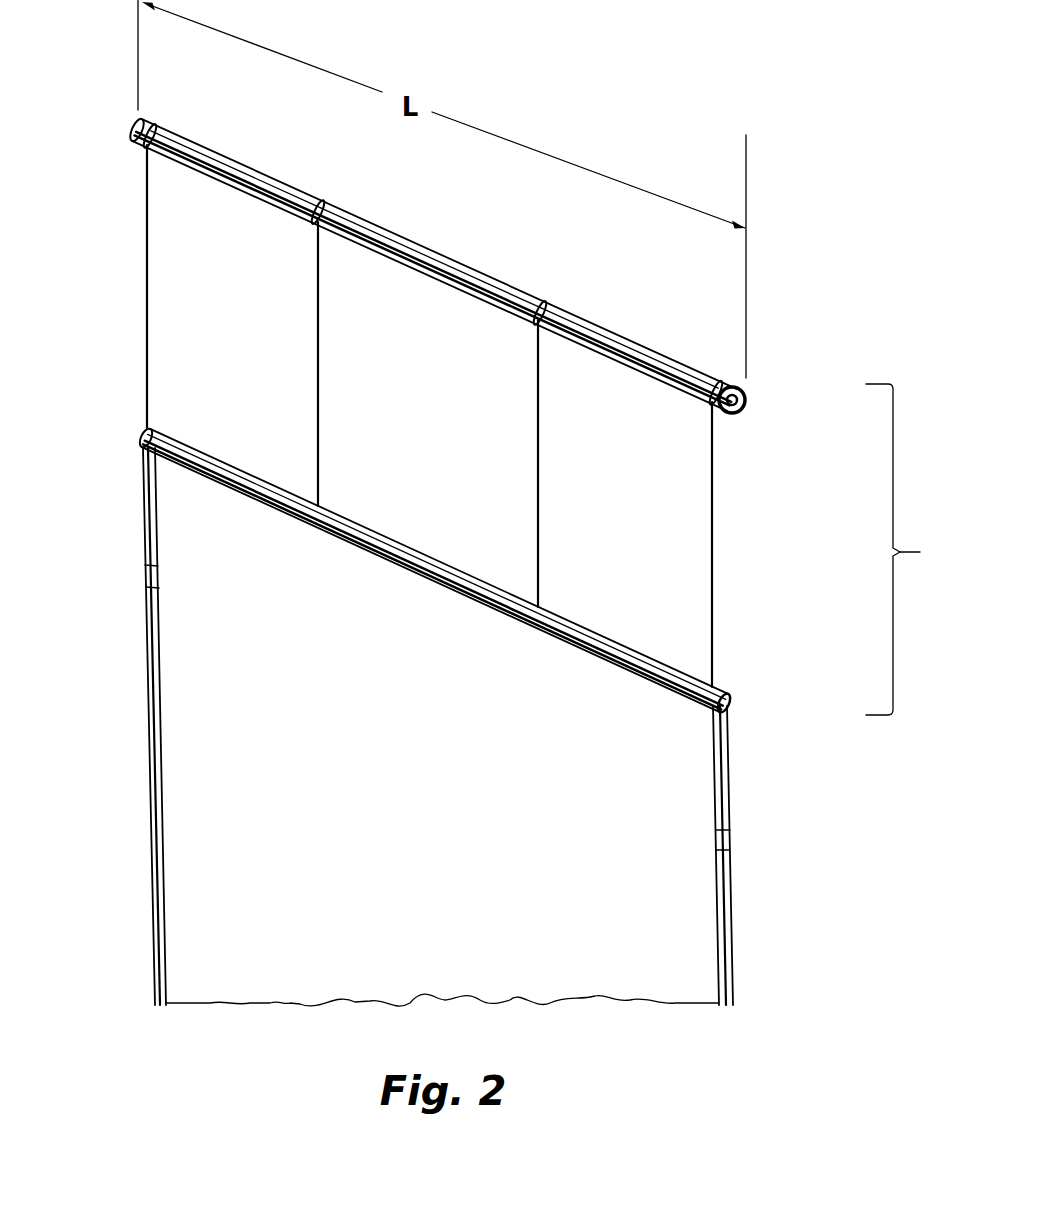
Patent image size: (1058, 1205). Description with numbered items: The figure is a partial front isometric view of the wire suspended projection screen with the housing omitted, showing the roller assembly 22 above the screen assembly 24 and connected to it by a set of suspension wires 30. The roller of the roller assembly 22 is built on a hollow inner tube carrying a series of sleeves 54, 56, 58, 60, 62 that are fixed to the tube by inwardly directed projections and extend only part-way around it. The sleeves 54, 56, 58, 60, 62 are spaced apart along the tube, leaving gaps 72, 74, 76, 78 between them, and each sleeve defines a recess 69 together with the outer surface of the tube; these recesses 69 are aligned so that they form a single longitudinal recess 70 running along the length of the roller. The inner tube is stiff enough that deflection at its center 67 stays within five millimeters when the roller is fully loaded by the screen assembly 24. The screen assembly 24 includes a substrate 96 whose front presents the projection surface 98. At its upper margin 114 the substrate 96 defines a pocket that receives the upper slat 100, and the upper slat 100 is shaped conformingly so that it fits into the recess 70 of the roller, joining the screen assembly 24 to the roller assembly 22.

The roller assembly 22 is at (915, 549).
The screen assembly 24 is at (652, 865).
The cords 30 is at (150, 362).
The sleeve 54 is at (734, 384).
The sleeve 56 is at (638, 338).
The sleeve 58 is at (397, 232).
The sleeve 60 is at (250, 172).
The sleeve 62 is at (133, 135).
The center 67 is at (443, 247).
The recess 69 is at (137, 147).
The recess 70 is at (488, 318).
The gap 72 is at (722, 378).
The gap 74 is at (545, 300).
The gap 76 is at (320, 202).
The gap 78 is at (150, 124).
The substrate 96 is at (150, 878).
The projection surface 98 is at (378, 840).
The upper slat 100 is at (727, 700).
The upper margin 114 is at (727, 712).